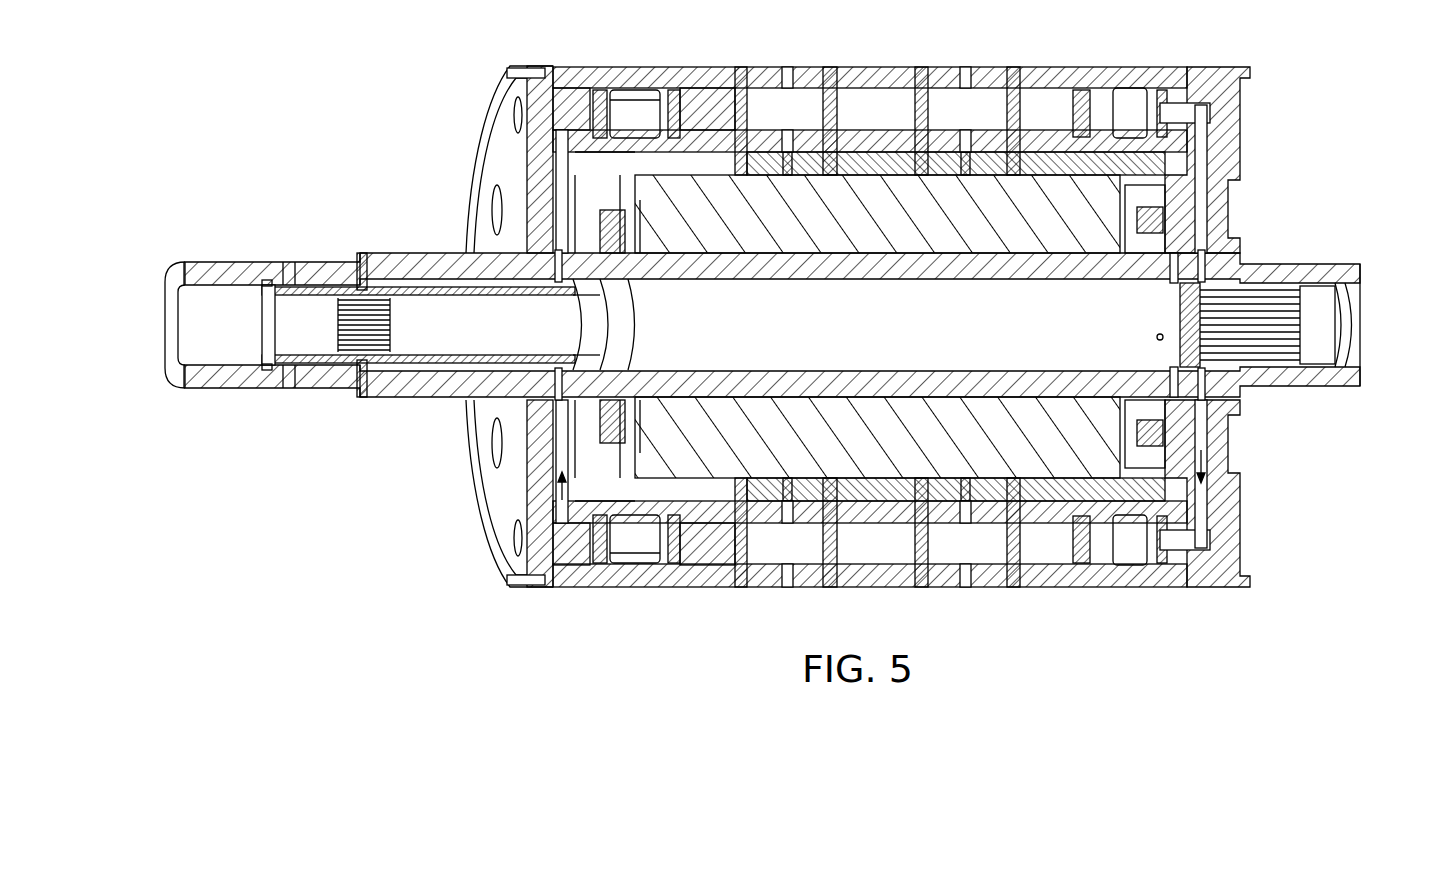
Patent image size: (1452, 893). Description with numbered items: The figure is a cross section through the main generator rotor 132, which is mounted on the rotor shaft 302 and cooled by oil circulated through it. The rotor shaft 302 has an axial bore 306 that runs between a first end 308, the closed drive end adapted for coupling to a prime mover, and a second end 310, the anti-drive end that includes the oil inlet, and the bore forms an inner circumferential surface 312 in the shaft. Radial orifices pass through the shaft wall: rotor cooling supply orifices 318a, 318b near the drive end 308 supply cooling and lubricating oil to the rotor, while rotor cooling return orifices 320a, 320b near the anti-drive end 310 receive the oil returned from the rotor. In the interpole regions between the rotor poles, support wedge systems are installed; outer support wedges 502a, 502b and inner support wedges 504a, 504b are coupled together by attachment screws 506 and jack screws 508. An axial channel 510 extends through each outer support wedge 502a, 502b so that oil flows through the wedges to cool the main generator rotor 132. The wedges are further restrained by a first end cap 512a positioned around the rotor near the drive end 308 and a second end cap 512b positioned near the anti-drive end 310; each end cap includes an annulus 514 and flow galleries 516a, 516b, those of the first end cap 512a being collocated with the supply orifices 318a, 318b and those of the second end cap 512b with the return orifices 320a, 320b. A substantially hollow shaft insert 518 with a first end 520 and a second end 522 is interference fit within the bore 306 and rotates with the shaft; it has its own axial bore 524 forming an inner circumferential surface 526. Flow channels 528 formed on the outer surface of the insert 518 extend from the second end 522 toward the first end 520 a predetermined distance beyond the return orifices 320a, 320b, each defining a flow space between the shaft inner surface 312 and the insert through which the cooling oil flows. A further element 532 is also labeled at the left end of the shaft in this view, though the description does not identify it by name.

The main generator rotor 132 is at (804, 293).
The rotor shaft 302 is at (998, 372).
The axial bore 306 is at (903, 334).
The first end 308 is at (1335, 279).
The second end 310 is at (259, 271).
The inner circumferential surface 312 is at (170, 357).
The rotor cooling supply orifice 318a is at (1172, 285).
The rotor cooling supply orifice 318b is at (1172, 367).
The rotor cooling return orifice 320a is at (600, 300).
The rotor cooling return orifice 320b is at (600, 350).
The outer support wedge 502a is at (1062, 67).
The outer support wedge 502b is at (1080, 587).
The inner support wedge 504a is at (882, 176).
The inner support wedge 504b is at (882, 478).
The attachment screws 506 is at (750, 67).
The jack screws 508 is at (788, 176).
The axial channel 510 is at (876, 95).
The first end cap 512a is at (1236, 115).
The second end cap 512b is at (537, 68).
The annulus 514 is at (548, 252).
The flow gallery 516a is at (560, 200).
The flow gallery 516b is at (560, 458).
The shaft insert 518 is at (350, 387).
The first end 520 is at (597, 318).
The second end 522 is at (262, 306).
The axial bore 524 is at (478, 337).
The inner circumferential surface 526 is at (528, 298).
The flow channels 528 is at (345, 262).
The bushing 532 is at (286, 262).